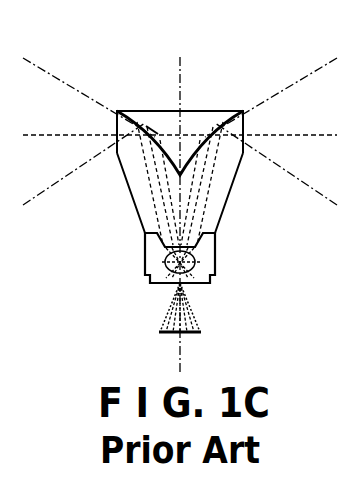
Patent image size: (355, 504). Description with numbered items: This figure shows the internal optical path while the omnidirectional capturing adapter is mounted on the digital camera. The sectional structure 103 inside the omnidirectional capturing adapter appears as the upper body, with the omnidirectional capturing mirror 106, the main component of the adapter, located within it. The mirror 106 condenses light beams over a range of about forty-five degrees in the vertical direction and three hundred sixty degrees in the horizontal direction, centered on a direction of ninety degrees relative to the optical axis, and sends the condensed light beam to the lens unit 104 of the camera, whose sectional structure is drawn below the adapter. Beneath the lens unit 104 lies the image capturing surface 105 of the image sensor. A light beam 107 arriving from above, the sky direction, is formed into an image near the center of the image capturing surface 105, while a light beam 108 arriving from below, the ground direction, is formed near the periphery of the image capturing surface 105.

The sectional structure inside the omnidirectional capturing adapter 103 is at (233, 210).
The lens unit of the camera 104 is at (215, 278).
The image capturing surface of the image sensor 105 is at (186, 335).
The omnidirectional capturing mirror 106 is at (152, 130).
The light beam from above 107 is at (63, 80).
The light beam from below 108 is at (50, 187).